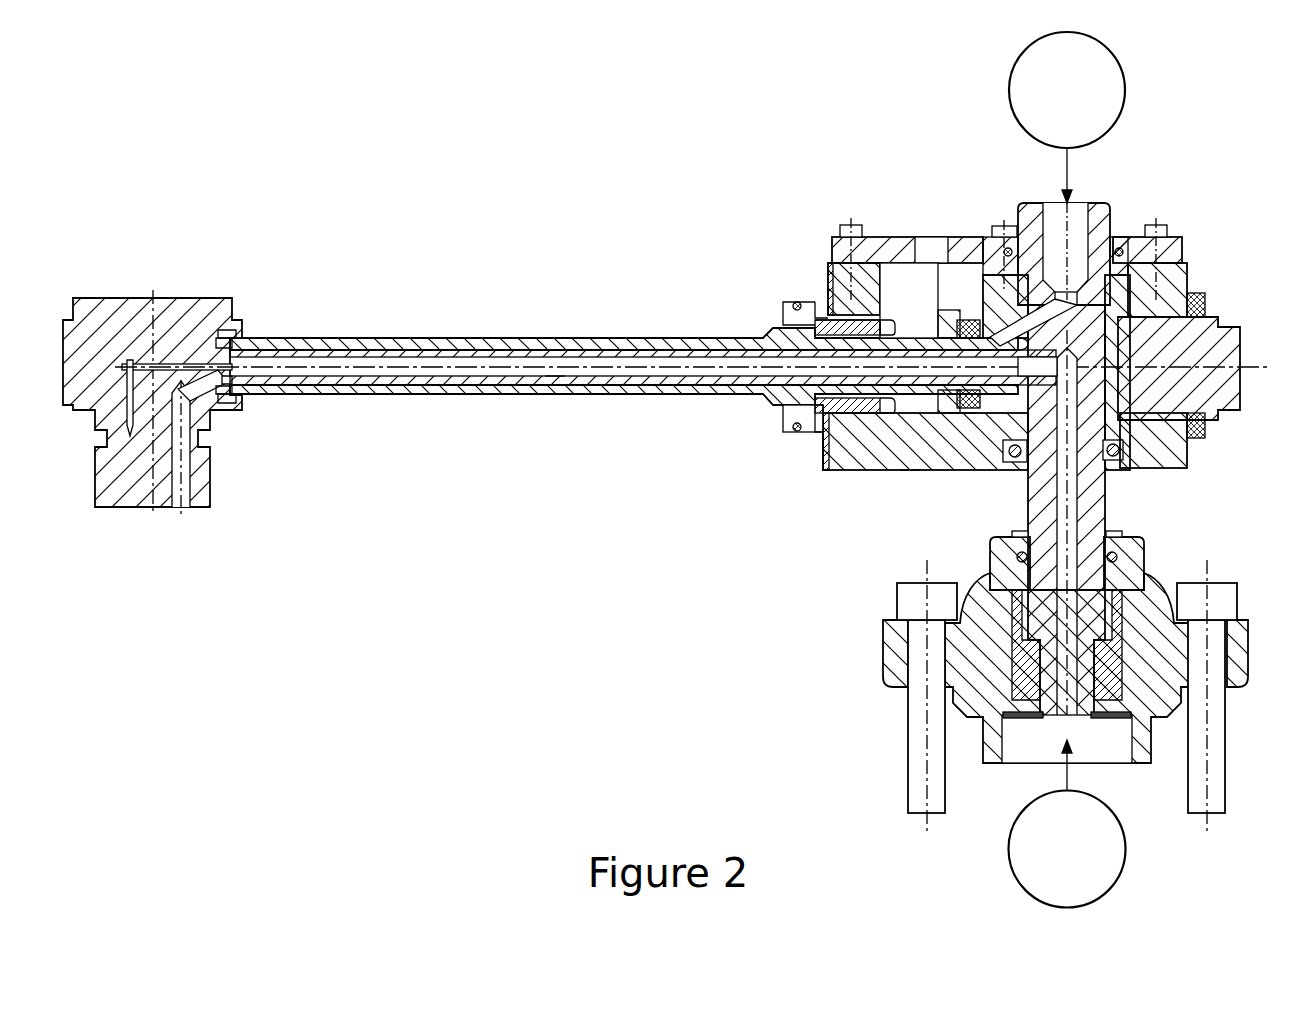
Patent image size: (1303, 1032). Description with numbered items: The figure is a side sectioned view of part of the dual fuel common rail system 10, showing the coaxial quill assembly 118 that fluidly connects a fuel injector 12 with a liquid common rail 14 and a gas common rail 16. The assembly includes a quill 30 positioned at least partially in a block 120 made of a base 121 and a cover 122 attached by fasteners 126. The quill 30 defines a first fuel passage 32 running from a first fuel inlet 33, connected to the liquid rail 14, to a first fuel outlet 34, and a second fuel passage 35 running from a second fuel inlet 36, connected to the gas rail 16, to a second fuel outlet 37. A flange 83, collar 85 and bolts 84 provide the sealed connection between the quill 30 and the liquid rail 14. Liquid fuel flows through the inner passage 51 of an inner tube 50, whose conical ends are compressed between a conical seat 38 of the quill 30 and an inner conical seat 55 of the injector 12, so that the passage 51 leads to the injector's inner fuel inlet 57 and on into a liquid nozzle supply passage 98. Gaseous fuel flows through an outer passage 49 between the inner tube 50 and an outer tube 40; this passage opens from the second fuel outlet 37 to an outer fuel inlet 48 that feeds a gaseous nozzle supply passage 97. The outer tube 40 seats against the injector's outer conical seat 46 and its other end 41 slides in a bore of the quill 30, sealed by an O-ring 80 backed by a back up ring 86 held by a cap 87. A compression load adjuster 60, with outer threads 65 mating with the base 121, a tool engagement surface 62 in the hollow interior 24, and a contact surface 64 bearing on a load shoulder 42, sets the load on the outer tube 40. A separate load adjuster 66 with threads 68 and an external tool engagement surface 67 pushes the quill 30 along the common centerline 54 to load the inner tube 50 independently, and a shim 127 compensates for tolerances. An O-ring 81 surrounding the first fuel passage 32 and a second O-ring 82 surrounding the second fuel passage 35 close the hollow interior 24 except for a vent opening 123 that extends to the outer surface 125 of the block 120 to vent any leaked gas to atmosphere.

The dual fuel common rail system 10 is at (396, 662).
The fuel injector 12 is at (212, 470).
The first common rail 14 is at (1009, 855).
The second common rail 16 is at (1009, 90).
The hollow interior 24 is at (922, 307).
The quill 30 is at (1107, 493).
The first fuel passage 32 is at (1070, 503).
The first fuel inlet 33 is at (1055, 750).
The first fuel outlet 34 is at (1018, 370).
The second fuel passage 35 is at (1040, 304).
The second fuel inlet 36 is at (1077, 203).
The second fuel outlet 37 is at (1019, 342).
The conical seat 38 is at (972, 388).
The outer tube 40 is at (619, 337).
The one end 41 is at (1012, 330).
The load shoulder 42 is at (802, 310).
The outer conical seat 46 is at (238, 338).
The outer fuel inlet 48 is at (228, 400).
The outer passage 49 is at (553, 384).
The inner tube 50 is at (490, 388).
The inner passage 51 is at (426, 351).
The common centerline 54 is at (681, 370).
The inner conical seat 55 is at (234, 381).
The inner fuel inlet 57 is at (218, 340).
The compression load adjuster 60 is at (824, 433).
The tool engagement surface 62 is at (888, 412).
The contact surface 64 is at (787, 423).
The outer threads 65 is at (857, 435).
The load adjuster 66 is at (1216, 418).
The tool engagement surface 67 is at (1230, 318).
The threads 68 is at (1188, 448).
The O-ring 80 is at (970, 320).
The O-ring 81 is at (1024, 463).
The second O-ring 82 is at (1114, 236).
The flange 83 is at (883, 650).
The bolts 84 is at (908, 735).
The collar 85 is at (1102, 710).
The back up ring 86 is at (964, 412).
The cap 87 is at (940, 313).
The gaseous nozzle supply passage 97 is at (186, 488).
The liquid nozzle supply passage 98 is at (130, 358).
The coaxial quill assembly 118 is at (838, 472).
The block 120 is at (965, 472).
The base 121 is at (908, 472).
The cover 122 is at (893, 236).
The vent opening 123 is at (940, 262).
The outer surface 125 is at (968, 236).
The fasteners 126 is at (851, 224).
The shim 127 is at (825, 472).